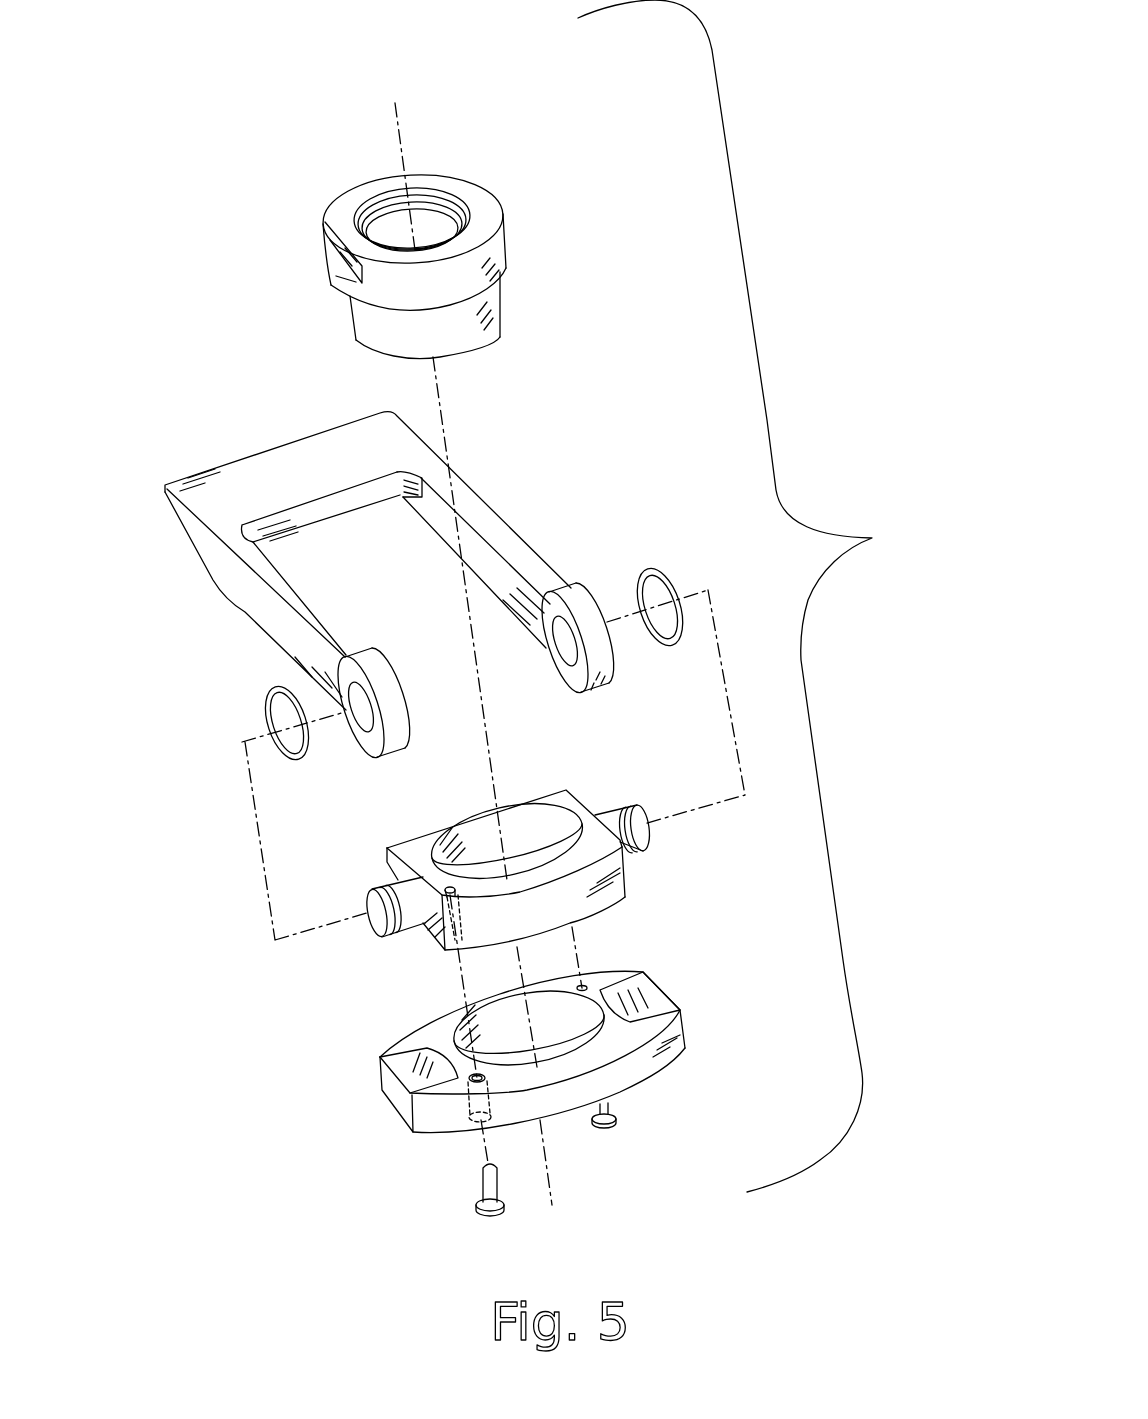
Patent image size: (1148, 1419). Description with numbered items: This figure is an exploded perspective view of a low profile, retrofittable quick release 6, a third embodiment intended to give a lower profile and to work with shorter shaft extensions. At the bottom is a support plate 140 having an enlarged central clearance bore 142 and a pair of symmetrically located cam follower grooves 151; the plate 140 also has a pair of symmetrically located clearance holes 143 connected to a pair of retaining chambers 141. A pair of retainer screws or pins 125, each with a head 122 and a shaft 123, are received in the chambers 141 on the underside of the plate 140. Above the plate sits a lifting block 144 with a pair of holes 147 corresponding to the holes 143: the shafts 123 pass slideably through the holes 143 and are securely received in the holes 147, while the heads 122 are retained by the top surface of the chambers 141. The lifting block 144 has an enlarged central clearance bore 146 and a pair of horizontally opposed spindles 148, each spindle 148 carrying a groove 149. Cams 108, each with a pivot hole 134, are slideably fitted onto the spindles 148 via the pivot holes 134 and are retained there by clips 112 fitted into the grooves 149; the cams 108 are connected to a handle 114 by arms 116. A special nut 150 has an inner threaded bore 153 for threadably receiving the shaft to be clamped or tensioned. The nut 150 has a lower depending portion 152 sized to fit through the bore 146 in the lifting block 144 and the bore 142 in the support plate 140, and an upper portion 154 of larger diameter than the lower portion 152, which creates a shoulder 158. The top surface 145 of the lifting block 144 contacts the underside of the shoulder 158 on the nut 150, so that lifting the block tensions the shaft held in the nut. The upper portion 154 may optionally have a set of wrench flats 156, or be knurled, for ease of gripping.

The tool holder assembly 6 is at (742, 596).
The cam 108 is at (392, 690).
The clip 112 is at (275, 697).
The yoke 114 is at (408, 597).
The arm 116 is at (232, 610).
The head 122 is at (483, 1213).
The shaft 123 is at (482, 1175).
The retainer screw or pin 125 is at (615, 1105).
The pivot hole 134 is at (362, 727).
The support plate 140 is at (545, 1068).
The retaining chamber 141 is at (492, 1103).
The central clearance bore 142 is at (577, 1022).
The clearance hole 143 is at (477, 1075).
The lifting block 144 is at (503, 869).
The top surface 145 is at (413, 845).
The central clearance bore 146 is at (530, 827).
The hole 147 is at (448, 960).
The spindle 148 is at (387, 878).
The groove 149 is at (393, 933).
The special nut 150 is at (408, 242).
The cam follower groove 151 is at (400, 1073).
The lower depending portion 152 is at (385, 329).
The inner threaded bore 153 is at (443, 208).
The upper portion 154 is at (348, 285).
The wrench flats 156 is at (333, 243).
The shoulder 158 is at (518, 282).